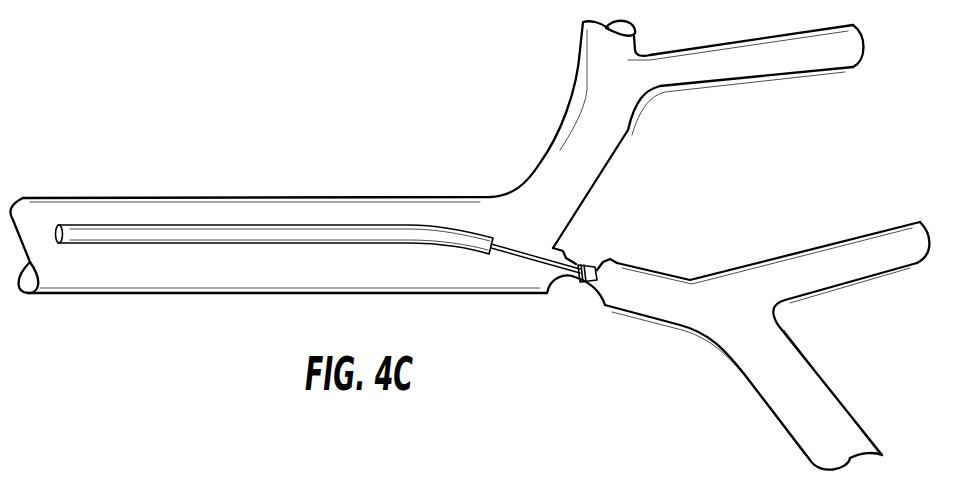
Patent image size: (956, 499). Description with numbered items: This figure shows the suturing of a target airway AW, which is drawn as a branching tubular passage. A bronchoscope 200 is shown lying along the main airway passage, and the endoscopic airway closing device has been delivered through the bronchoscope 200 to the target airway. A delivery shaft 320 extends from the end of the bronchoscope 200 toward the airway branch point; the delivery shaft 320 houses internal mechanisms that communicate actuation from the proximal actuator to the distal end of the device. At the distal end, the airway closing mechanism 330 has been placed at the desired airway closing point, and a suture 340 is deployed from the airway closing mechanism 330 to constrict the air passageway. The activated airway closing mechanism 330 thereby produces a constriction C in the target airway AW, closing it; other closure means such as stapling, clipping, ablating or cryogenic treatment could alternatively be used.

The bronchoscope 200 is at (320, 226).
The delivery shaft 320 is at (513, 258).
The airway closing mechanism 330 is at (603, 303).
The suture 340 is at (600, 267).
The constriction C is at (607, 262).
The airway AW is at (667, 310).